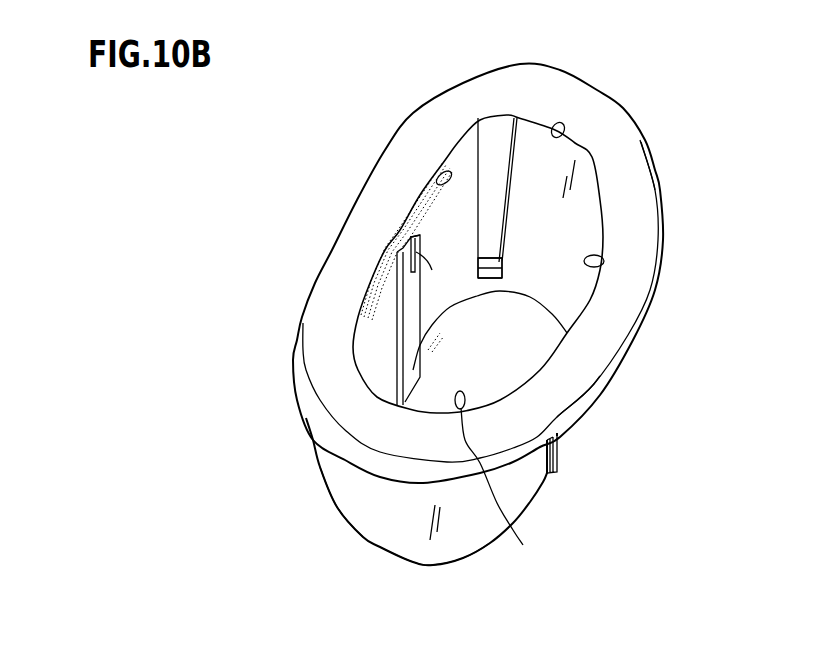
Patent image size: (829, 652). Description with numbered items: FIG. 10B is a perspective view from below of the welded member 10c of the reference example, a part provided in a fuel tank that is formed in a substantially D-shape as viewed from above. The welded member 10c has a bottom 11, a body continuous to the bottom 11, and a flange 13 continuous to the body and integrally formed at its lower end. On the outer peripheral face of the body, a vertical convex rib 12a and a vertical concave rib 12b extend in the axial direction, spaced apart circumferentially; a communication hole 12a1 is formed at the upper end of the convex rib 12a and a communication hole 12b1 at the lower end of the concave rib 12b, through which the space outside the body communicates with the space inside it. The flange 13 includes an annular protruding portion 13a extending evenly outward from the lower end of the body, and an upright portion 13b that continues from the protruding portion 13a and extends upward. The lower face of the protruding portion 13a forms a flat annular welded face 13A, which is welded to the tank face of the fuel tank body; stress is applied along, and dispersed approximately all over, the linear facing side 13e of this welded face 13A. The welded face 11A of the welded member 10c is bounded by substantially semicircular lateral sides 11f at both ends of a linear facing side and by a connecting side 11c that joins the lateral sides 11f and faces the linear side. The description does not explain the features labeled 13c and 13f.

The welded member 10c is at (641, 99).
The bottom 11 is at (460, 543).
The welded face 11A is at (433, 572).
The connecting side 11c is at (548, 482).
The lateral side 11f is at (354, 534).
The vertical convex rib 12a is at (495, 138).
The communication hole 12a1 is at (490, 267).
The vertical concave rib 12b is at (413, 343).
The communication hole 12b1 is at (400, 276).
The flange 13 is at (649, 137).
The welded face 13A is at (541, 92).
The protruding portion 13a is at (652, 167).
The upright portion 13b is at (589, 394).
The inner surface of ring 13c is at (604, 262).
The linear facing side 13e is at (438, 173).
The seam line of ring 13f is at (556, 122).